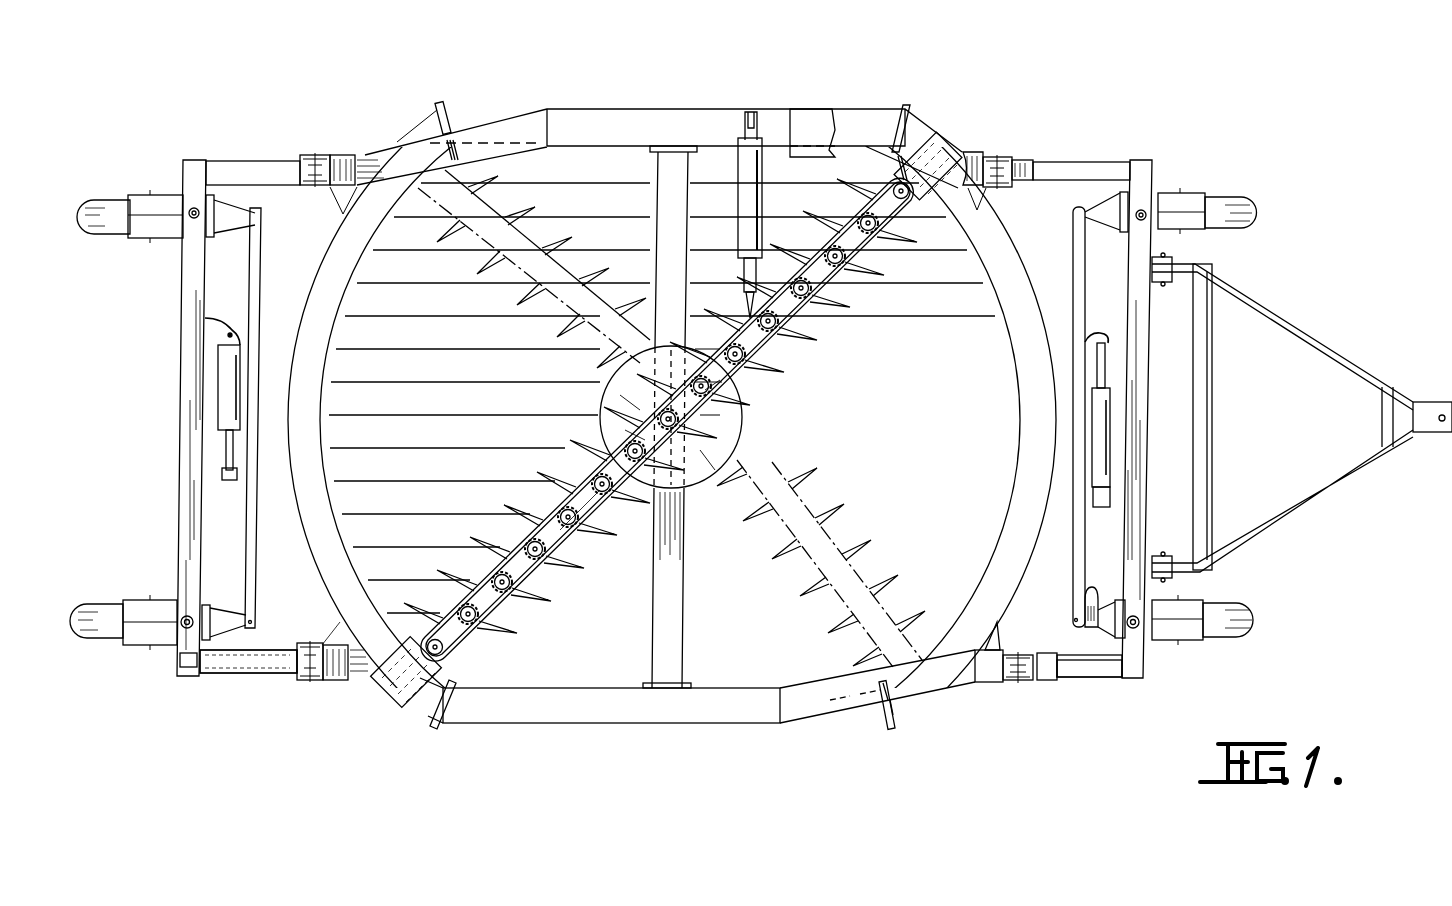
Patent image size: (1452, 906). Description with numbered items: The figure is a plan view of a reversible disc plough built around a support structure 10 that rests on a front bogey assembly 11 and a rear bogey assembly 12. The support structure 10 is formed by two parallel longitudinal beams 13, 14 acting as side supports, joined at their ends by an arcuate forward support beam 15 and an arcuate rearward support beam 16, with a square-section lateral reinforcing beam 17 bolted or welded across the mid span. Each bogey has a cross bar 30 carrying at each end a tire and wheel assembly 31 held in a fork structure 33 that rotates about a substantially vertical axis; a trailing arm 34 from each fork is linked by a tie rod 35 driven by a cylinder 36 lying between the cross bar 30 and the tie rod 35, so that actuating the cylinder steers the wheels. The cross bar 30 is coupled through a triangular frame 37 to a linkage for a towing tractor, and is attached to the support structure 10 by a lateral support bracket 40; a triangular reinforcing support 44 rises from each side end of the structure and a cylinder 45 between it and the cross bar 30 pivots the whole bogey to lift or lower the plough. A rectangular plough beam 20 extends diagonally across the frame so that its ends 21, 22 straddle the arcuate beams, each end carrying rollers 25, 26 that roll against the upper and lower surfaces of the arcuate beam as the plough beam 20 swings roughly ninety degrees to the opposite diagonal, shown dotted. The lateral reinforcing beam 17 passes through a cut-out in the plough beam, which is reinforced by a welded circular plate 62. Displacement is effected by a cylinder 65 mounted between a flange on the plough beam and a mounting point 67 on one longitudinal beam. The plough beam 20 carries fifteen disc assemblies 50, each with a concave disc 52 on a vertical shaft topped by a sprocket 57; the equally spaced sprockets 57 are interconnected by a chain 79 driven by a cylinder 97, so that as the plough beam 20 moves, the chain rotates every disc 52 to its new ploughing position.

The support structure 10 is at (816, 100).
The front bogey assembly 11 is at (875, 735).
The rear bogey assembly 12 is at (215, 697).
The longitudinal beam 13 is at (555, 700).
The longitudinal beam 14 is at (580, 118).
The arcuate forward support beam 15 is at (1025, 316).
The arcuate rearward support beam 16 is at (330, 385).
The lateral reinforcing beam 17 is at (660, 628).
The plough beam 20 is at (795, 365).
The end of plough beam 21 is at (945, 137).
The end of plough beam 22 is at (403, 705).
The roller 25 is at (436, 720).
The roller 26 is at (358, 680).
The cross bar 30 is at (190, 332).
The tire and wheel assembly 31 is at (105, 222).
The fork structure 33 is at (1198, 193).
The trailing arm 34 is at (1086, 594).
The tie rod 35 is at (252, 410).
The pneumatic or hydraulic cylinder 36 is at (222, 383).
The triangular frame 37 is at (1318, 340).
The lateral support bracket 40 is at (1096, 662).
The triangular reinforcing support 44 is at (514, 135).
The hydraulic or pneumatic cylinder 45 is at (1060, 163).
The disc assembly 50 is at (614, 505).
The concave disc 52 is at (878, 243).
The sprocket 57 is at (878, 285).
The circular plate 62 is at (600, 410).
The pneumatic or hydraulic cylinder 65 is at (735, 177).
The mounting point 67 is at (745, 115).
The chain 79 is at (840, 325).
The hydraulic or pneumatic cylinder 97 is at (578, 560).